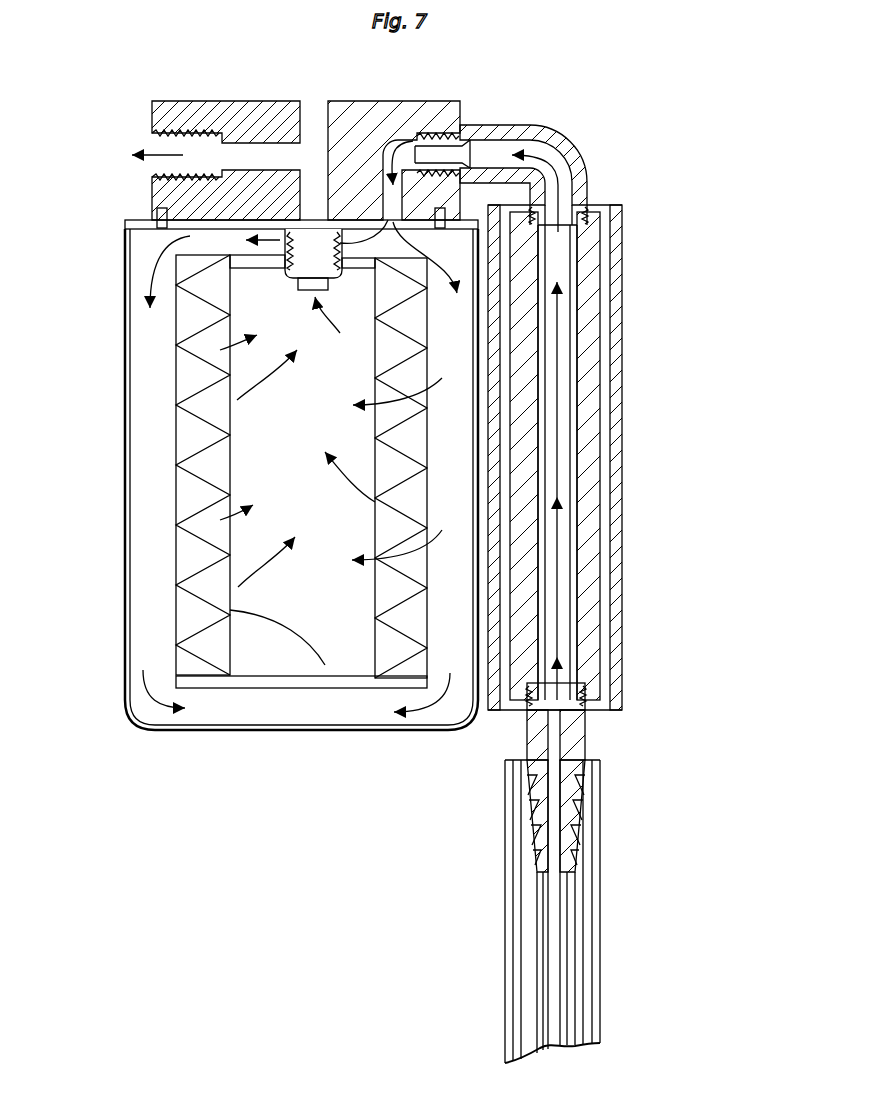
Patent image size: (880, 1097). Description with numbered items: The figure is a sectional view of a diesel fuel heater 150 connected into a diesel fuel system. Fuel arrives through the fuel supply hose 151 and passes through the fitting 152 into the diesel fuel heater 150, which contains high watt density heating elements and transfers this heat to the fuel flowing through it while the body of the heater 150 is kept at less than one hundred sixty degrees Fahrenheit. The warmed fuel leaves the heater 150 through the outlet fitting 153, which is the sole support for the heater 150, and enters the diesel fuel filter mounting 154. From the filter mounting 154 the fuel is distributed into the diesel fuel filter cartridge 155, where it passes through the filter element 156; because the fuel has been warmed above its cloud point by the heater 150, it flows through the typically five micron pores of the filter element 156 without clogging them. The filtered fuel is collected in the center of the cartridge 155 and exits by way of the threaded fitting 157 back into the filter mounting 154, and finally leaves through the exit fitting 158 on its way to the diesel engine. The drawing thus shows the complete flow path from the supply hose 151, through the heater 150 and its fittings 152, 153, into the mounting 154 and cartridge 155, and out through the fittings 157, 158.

The diesel fuel heater 150 is at (625, 510).
The fuel supply hose 151 is at (600, 872).
The fitting 152 is at (585, 735).
The outlet fitting 153 is at (590, 158).
The diesel fuel filter mounting 154 is at (228, 101).
The diesel fuel filter cartridge 155 is at (124, 398).
The filter element 156 is at (375, 590).
The threaded fitting 157 is at (157, 230).
The exit fitting 158 is at (152, 165).